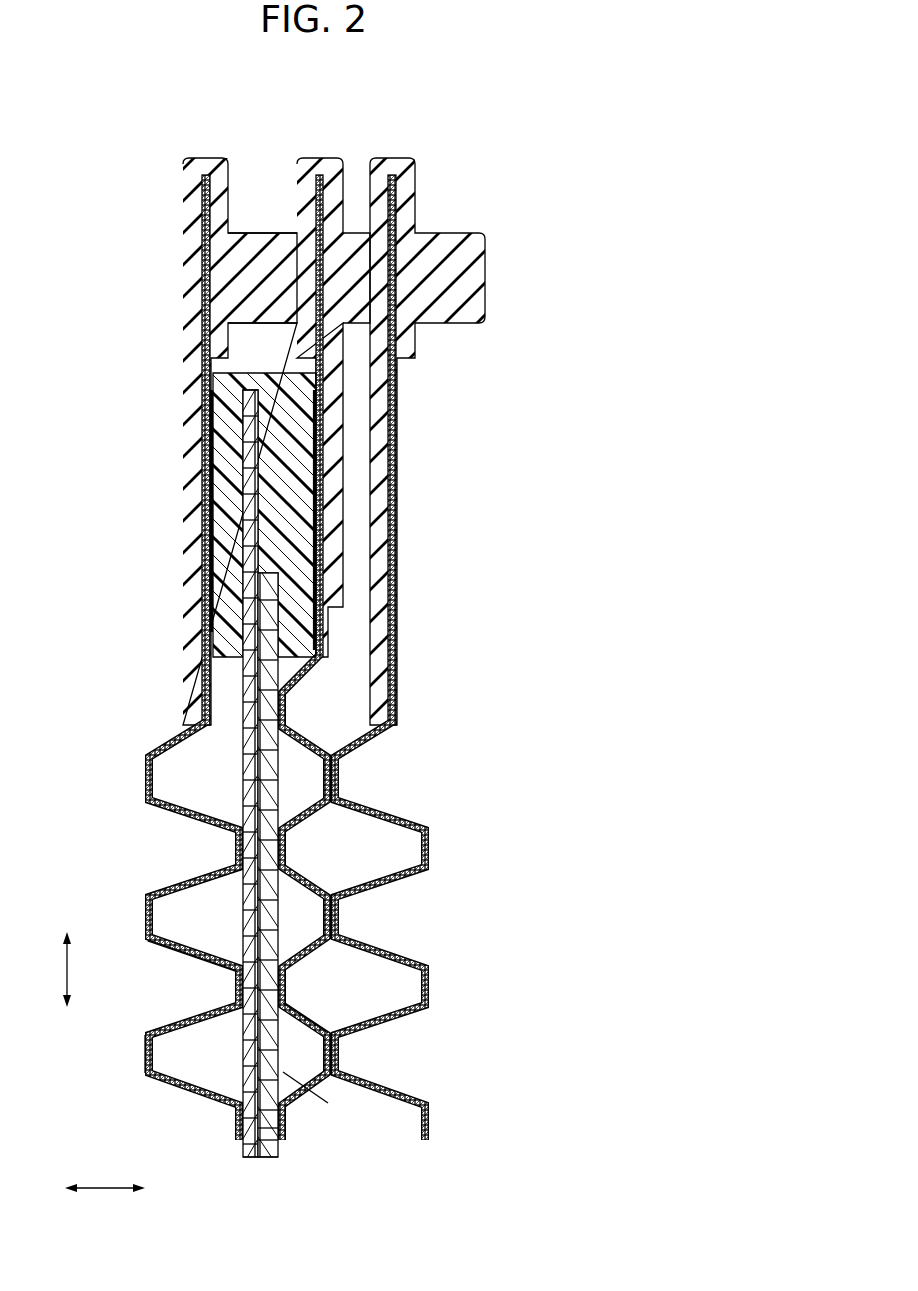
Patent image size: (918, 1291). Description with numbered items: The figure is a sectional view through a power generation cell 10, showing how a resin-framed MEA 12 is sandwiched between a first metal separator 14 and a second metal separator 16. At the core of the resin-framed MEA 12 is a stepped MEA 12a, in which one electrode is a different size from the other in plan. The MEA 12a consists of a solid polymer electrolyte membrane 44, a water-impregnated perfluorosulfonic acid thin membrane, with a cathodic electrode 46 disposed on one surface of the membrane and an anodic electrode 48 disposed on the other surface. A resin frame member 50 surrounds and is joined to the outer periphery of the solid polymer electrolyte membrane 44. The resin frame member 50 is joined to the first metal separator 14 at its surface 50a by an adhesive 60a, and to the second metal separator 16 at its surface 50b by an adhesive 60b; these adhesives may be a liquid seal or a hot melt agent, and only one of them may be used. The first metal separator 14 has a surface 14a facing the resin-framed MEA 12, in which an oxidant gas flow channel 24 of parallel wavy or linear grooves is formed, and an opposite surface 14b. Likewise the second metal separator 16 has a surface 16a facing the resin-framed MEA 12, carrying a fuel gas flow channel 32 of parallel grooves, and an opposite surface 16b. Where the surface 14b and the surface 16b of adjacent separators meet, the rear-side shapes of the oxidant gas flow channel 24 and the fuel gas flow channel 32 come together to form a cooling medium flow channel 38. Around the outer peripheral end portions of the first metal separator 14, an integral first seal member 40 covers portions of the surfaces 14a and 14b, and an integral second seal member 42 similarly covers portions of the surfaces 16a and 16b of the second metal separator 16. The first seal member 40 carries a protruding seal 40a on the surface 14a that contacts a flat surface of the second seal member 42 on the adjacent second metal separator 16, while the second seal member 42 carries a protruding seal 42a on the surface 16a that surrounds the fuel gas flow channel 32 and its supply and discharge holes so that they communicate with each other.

The power generation cell 10 is at (464, 86).
The resin-framed MEA 12 is at (268, 763).
The MEA 12a is at (233, 685).
The first metal separator 14 is at (255, 615).
The surface of the first metal separator 14a is at (191, 1025).
The surface of the first metal separator 14b is at (146, 1057).
The second metal separator 16 is at (340, 615).
The surface of the second metal separator 16a is at (308, 1075).
The surface of the second metal separator 16b is at (312, 1022).
The oxidant gas flow channel 24 is at (177, 913).
The fuel gas flow channel 32 is at (307, 917).
The cooling medium flow channel 38 is at (400, 835).
The first seal member 40 is at (306, 441).
The protruding seal 40a is at (256, 238).
The second seal member 42 is at (372, 389).
The protruding seal 42a is at (358, 240).
The solid polymer electrolyte membrane 44 is at (288, 1128).
The cathodic electrode 46 is at (250, 1158).
The anodic electrode 48 is at (268, 1158).
The resin frame member 50 is at (289, 763).
The surface of the resin frame member 50a is at (225, 582).
The surface of the resin frame member 50b is at (292, 596).
The adhesive 60a is at (203, 388).
The adhesive 60b is at (320, 388).